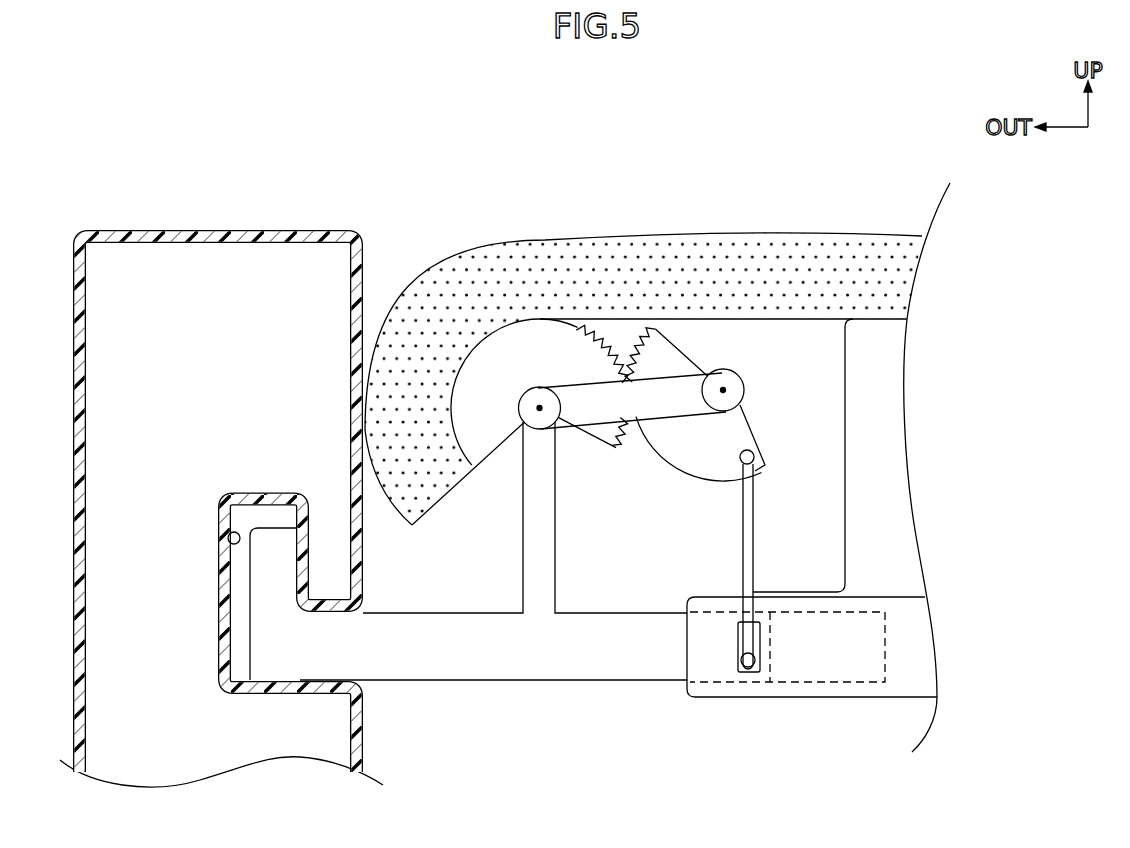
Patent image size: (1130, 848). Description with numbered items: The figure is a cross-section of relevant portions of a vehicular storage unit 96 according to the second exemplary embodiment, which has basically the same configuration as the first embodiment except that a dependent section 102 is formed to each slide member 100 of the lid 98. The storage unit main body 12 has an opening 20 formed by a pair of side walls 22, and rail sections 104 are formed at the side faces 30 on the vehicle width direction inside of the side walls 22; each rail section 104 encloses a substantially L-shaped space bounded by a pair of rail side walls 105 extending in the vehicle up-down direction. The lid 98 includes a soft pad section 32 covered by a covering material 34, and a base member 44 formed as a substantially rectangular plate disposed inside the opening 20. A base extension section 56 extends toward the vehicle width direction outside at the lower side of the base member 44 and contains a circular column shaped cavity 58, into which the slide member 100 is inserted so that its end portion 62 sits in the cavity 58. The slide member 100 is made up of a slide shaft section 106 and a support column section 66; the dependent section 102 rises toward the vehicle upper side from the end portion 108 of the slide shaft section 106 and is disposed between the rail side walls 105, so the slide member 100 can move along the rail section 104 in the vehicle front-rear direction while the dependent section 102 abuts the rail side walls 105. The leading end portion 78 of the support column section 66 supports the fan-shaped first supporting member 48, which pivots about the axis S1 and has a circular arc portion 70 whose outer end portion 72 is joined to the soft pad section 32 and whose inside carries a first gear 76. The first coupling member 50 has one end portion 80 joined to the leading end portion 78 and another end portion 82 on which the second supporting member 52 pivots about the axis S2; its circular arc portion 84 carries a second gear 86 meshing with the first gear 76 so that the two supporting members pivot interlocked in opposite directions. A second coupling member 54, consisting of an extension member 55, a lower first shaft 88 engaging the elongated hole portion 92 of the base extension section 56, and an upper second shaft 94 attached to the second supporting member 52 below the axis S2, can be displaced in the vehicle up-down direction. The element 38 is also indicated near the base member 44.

The storage unit main body 12 is at (188, 227).
The side walls 22 is at (252, 231).
The side face 30 is at (367, 262).
The opening 20 is at (367, 536).
The rail side walls 105 is at (312, 526).
The dependent section 102 is at (262, 538).
The rail sections 104 is at (228, 536).
The end portion 108 is at (268, 672).
The soft pad section 32 is at (655, 238).
The covering material 34 is at (553, 238).
The vehicular storage unit 96 is at (717, 146).
The lid 98 is at (752, 213).
The base member 44 is at (915, 447).
The end portion 72 is at (463, 470).
The circular arc portion 70 is at (460, 369).
The first gear 76 is at (590, 340).
The first coupling member 50 is at (600, 412).
The first supporting member 48 is at (487, 450).
The leading end portion 78 is at (533, 393).
The axis S1 is at (539, 408).
The one end portion 80 is at (560, 388).
The another end portion 82 is at (694, 373).
The second gear 86 is at (628, 353).
The axis S2 is at (723, 390).
The circular arc portion 84 is at (707, 480).
The second supporting member 52 is at (663, 453).
The second shaft 94 is at (756, 458).
The second coupling member 54 is at (757, 538).
The extension member 55 is at (754, 498).
The panel 38 is at (760, 416).
The slide shaft section 106 is at (428, 667).
The slide member 100 is at (538, 686).
The support column section 66 is at (556, 563).
The base extension section 56 is at (713, 690).
The cavity 58 is at (810, 680).
The end portion 62 is at (765, 670).
The first shaft 88 is at (748, 668).
The elongated hole portion 92 is at (745, 637).